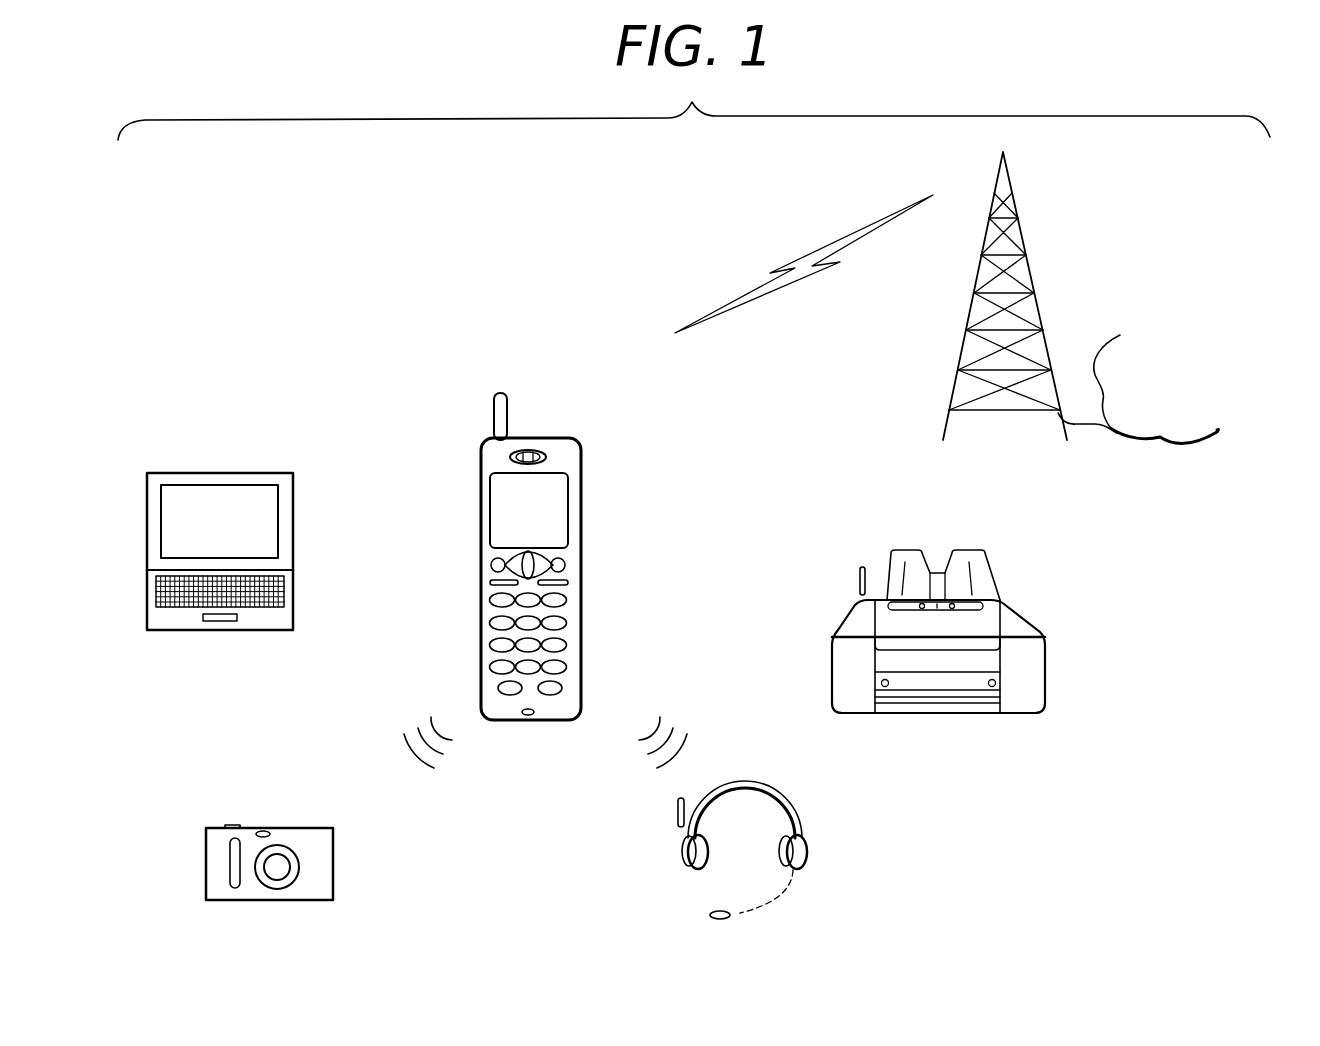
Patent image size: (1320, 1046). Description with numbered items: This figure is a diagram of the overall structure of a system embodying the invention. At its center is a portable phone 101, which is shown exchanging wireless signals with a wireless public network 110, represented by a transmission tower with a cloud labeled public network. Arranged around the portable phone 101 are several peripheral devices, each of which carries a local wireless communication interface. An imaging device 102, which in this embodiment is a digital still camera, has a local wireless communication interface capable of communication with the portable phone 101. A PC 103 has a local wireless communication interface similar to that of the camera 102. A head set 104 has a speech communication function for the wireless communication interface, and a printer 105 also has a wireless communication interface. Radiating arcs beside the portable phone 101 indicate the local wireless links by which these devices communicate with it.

The portable phone 101 is at (580, 507).
The imaging device 102 is at (333, 853).
The PC 103 is at (293, 510).
The head set 104 is at (795, 805).
The printer 105 is at (1045, 660).
The wireless public network 110 is at (1182, 452).